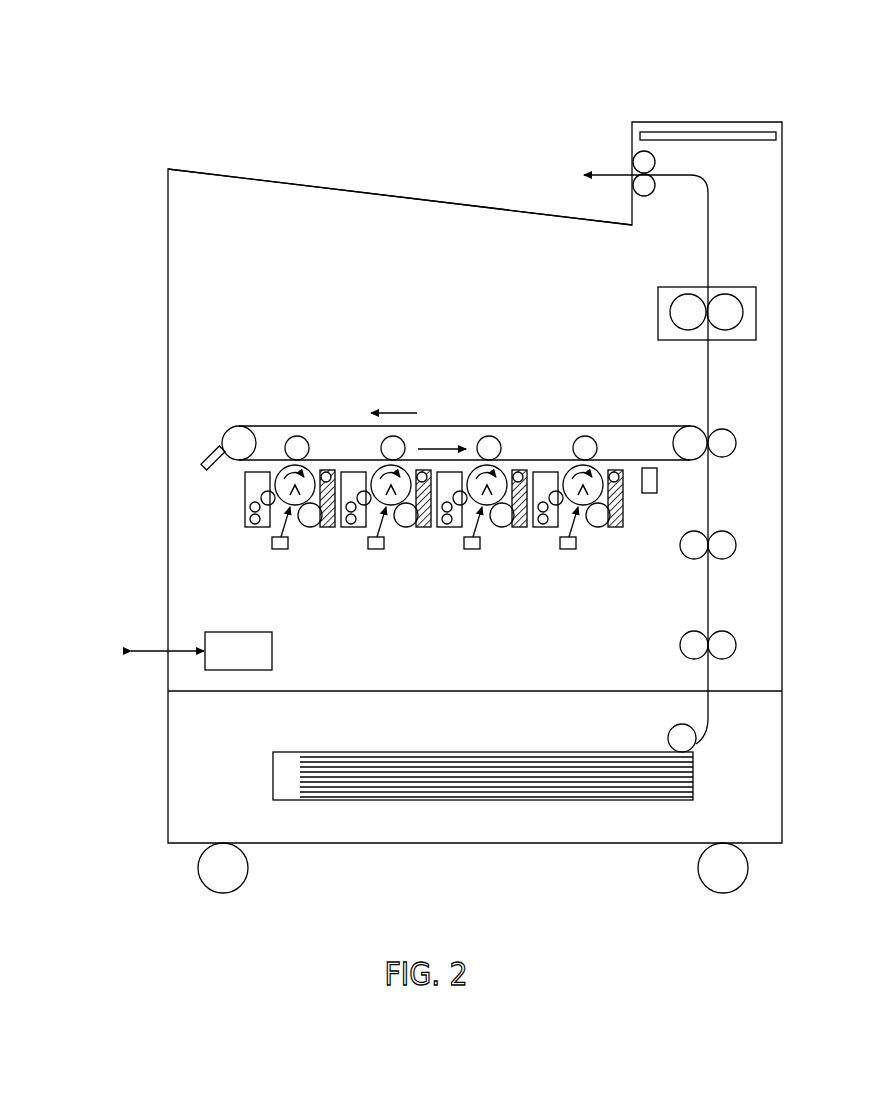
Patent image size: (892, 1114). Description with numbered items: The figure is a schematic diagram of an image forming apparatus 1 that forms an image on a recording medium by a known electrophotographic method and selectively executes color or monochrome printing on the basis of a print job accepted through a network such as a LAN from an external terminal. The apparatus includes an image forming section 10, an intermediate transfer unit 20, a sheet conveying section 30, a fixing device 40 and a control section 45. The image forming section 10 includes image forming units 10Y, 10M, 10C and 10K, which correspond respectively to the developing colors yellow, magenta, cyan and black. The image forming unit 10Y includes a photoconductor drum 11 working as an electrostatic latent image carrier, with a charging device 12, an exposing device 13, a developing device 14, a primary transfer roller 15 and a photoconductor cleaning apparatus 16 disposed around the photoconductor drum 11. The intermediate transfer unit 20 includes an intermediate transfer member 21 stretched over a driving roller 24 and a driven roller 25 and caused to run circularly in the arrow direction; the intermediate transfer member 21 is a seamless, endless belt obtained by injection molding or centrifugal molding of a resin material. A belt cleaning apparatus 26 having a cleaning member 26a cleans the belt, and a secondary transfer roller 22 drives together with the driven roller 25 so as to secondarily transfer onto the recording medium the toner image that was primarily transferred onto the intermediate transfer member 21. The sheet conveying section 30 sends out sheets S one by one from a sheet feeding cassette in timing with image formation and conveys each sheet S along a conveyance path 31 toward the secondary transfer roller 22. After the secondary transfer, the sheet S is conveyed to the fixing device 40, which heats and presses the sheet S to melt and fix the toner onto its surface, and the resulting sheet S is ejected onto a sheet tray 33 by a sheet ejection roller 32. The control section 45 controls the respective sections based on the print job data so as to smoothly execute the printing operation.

The image forming apparatus 1 is at (468, 28).
The image forming section 10 is at (227, 498).
The image forming unit 10Y is at (265, 560).
The image forming unit 10M is at (361, 560).
The image forming unit 10C is at (457, 560).
The image forming unit 10K is at (553, 560).
The photoconductor drum 11 is at (297, 506).
The charging device 12 is at (313, 527).
The exposing device 13 is at (281, 549).
The developing device 14 is at (258, 527).
The primary transfer roller 15 is at (296, 438).
The photoconductor cleaning apparatus 16 is at (328, 466).
The intermediate transfer unit 20 is at (227, 360).
The intermediate transfer member 21 is at (443, 425).
The secondary transfer roller 22 is at (722, 430).
The driving roller 24 is at (690, 428).
The driven roller 25 is at (237, 432).
The belt cleaning apparatus 26 is at (120, 425).
The cleaning member 26a is at (207, 452).
The sheet conveying section 30 is at (253, 768).
The conveyance path 31 is at (697, 735).
The sheet ejection roller 32 is at (645, 197).
The sheet tray 33 is at (372, 191).
The fixing device 40 is at (622, 303).
The control section 45 is at (272, 650).
The sheet S is at (375, 801).